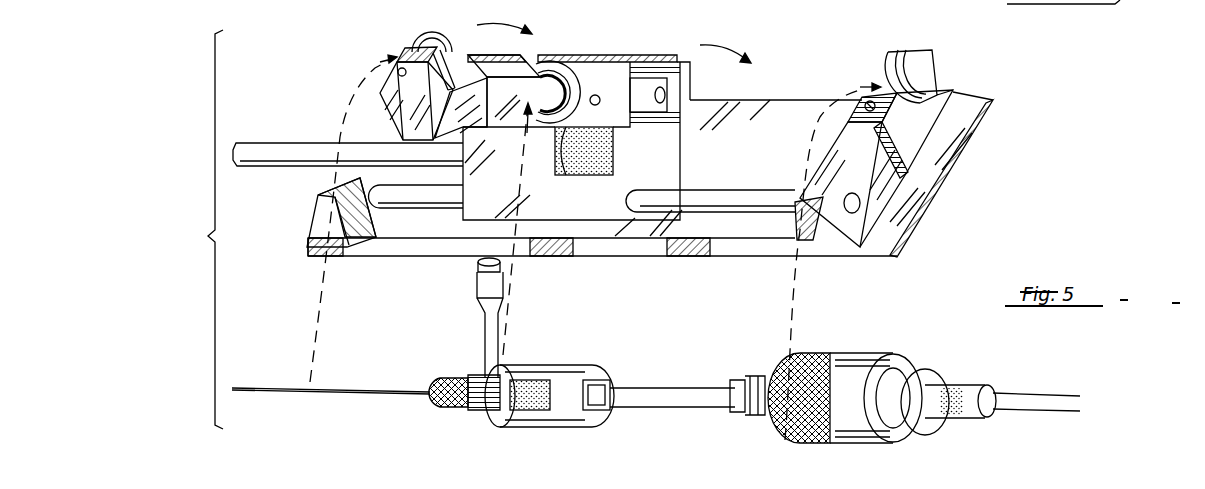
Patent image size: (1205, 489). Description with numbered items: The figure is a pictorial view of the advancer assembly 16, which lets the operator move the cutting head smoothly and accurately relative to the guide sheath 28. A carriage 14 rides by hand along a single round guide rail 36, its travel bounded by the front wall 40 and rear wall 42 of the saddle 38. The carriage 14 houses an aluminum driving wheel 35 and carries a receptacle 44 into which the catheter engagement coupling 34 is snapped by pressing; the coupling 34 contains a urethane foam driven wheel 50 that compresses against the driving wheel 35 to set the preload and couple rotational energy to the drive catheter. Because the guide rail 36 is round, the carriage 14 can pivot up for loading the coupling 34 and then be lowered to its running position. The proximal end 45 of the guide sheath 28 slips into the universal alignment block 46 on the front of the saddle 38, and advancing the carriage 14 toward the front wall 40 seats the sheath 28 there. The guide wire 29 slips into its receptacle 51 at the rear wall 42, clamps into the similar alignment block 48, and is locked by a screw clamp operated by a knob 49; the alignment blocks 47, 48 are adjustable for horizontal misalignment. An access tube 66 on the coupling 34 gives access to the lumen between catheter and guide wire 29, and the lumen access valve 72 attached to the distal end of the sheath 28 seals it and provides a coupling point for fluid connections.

The carriage 14 is at (475, 208).
The advancer assembly 16 is at (776, 76).
The guide sheath 28 is at (1022, 392).
The guide wire 29 is at (367, 388).
The catheter engagement coupling 34 is at (495, 404).
The driving wheel 35 is at (597, 150).
The guide rail 36 is at (758, 204).
The saddle 38 is at (810, 100).
The front wall 40 is at (802, 223).
The rear wall 42 is at (384, 218).
The receptacle 44 is at (575, 83).
The proximal end 45 is at (763, 377).
The universal alignment block 46 is at (927, 80).
The alignment block 47 is at (953, 93).
The alignment block 48 is at (404, 50).
The knob 49 is at (435, 37).
The driven wheel 50 is at (522, 403).
The receptacle 51 is at (397, 57).
The access tube 66 is at (497, 332).
The lumen access valve 72 is at (868, 346).